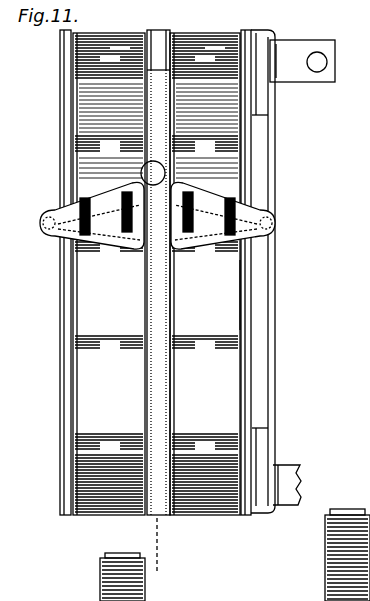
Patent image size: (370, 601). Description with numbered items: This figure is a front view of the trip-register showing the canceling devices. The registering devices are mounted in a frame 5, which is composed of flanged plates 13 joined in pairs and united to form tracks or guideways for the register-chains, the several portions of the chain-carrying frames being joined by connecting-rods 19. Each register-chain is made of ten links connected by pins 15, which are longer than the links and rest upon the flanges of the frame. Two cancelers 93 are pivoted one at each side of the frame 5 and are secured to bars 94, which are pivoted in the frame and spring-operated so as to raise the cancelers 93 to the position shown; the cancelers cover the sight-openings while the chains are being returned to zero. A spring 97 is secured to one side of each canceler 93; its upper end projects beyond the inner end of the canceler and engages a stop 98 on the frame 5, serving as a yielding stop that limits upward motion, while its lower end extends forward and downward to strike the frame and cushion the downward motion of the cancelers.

The frame 5 is at (237, 284).
The flanged plates 13 is at (147, 37).
The pins 15 is at (163, 30).
The connecting-rods 19 is at (213, 34).
The cancelers 93 is at (68, 200).
The bars 94 is at (46, 230).
The springs 97 is at (147, 193).
The stop 98 is at (146, 196).